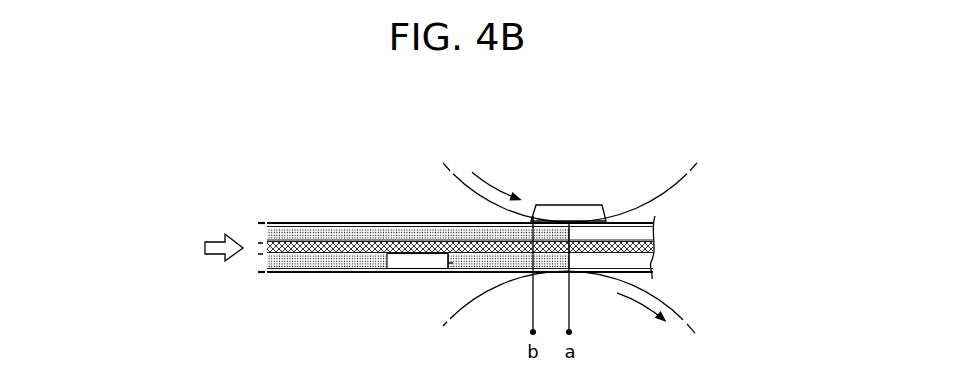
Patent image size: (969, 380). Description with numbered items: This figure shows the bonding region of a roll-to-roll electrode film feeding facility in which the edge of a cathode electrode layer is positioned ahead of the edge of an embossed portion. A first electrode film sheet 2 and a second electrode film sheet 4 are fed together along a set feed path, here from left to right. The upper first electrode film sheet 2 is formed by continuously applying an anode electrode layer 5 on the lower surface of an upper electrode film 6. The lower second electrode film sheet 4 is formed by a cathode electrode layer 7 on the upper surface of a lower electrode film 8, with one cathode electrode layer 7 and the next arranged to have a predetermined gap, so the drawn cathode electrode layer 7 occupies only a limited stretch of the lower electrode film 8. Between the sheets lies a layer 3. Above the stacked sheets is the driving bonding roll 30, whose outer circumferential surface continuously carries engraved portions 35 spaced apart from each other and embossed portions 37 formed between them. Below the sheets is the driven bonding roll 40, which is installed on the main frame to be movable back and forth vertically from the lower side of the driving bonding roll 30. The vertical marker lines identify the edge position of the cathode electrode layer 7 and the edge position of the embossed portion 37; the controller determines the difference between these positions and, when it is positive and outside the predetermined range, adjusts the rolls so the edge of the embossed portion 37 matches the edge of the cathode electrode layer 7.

The first electrode film sheet 2 is at (460, 183).
The display panel 3 is at (362, 247).
The second electrode film sheet 4 is at (419, 305).
The anode electrode layer 5 is at (317, 230).
The upper electrode film 6 is at (288, 222).
The cathode electrode layer 7 is at (448, 263).
The lower electrode film 8 is at (392, 269).
The driving bonding roll 30 is at (677, 192).
The engraved portion 35 is at (569, 205).
The embossed portion 37 is at (533, 217).
The driven bonding roll 40 is at (677, 305).